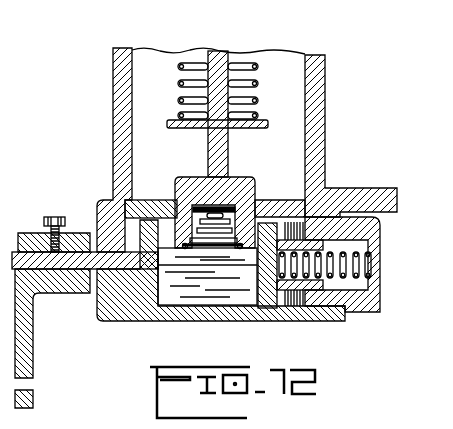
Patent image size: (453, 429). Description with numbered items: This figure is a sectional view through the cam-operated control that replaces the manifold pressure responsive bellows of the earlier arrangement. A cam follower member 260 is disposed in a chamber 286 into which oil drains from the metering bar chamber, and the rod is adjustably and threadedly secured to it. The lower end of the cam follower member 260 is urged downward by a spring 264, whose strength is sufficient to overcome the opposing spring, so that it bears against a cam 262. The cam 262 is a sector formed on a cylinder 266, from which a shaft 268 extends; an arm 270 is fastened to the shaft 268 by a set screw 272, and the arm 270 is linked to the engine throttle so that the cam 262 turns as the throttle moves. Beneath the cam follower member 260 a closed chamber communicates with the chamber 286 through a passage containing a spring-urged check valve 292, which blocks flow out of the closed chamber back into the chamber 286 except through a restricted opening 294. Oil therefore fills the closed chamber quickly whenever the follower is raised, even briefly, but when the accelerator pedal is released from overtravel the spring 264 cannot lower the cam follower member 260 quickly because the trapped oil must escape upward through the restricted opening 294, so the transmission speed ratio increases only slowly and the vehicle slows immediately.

The cam follower member 260 is at (197, 184).
The cam 262 is at (238, 256).
The spring 264 is at (180, 66).
The cylinder 266 is at (155, 321).
The shaft 268 is at (112, 268).
The arm 270 is at (29, 362).
The set screw 272 is at (66, 198).
The chamber 286 is at (292, 113).
The spring-urged check valve 292 is at (247, 202).
The restricted opening 294 is at (220, 200).